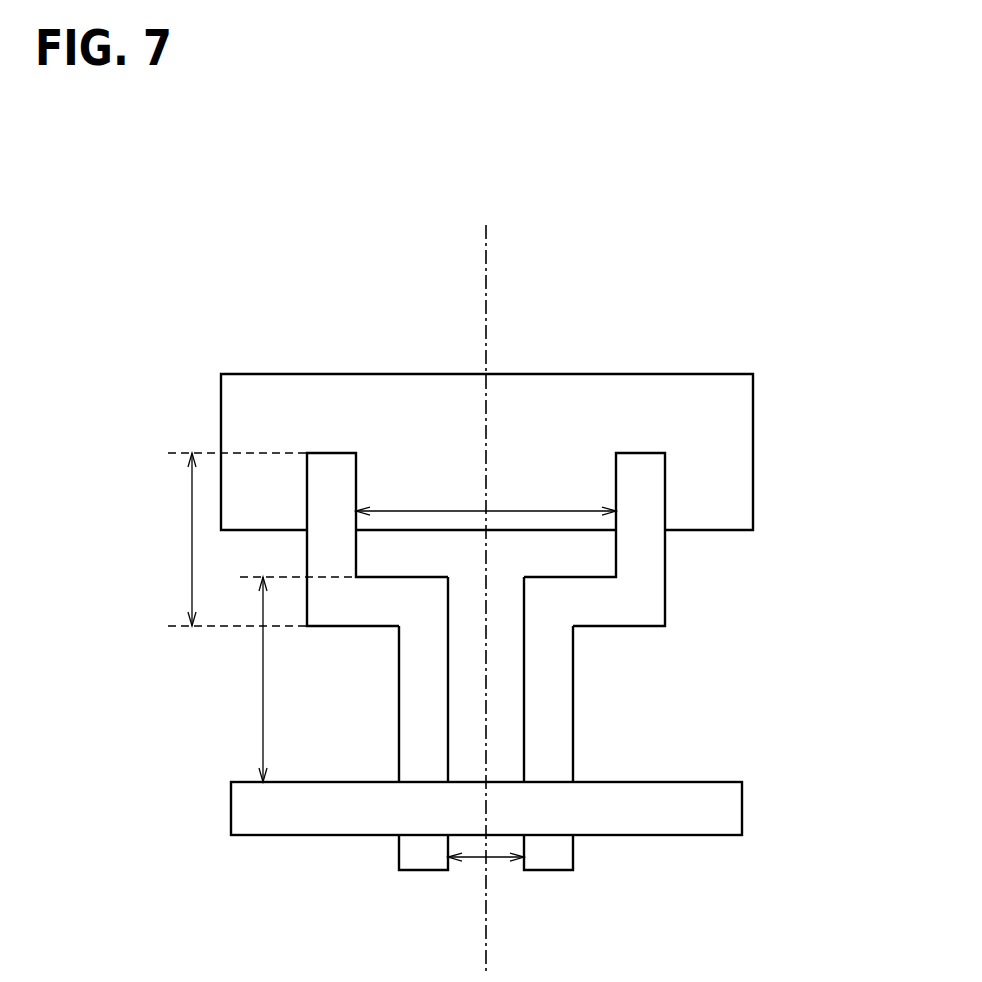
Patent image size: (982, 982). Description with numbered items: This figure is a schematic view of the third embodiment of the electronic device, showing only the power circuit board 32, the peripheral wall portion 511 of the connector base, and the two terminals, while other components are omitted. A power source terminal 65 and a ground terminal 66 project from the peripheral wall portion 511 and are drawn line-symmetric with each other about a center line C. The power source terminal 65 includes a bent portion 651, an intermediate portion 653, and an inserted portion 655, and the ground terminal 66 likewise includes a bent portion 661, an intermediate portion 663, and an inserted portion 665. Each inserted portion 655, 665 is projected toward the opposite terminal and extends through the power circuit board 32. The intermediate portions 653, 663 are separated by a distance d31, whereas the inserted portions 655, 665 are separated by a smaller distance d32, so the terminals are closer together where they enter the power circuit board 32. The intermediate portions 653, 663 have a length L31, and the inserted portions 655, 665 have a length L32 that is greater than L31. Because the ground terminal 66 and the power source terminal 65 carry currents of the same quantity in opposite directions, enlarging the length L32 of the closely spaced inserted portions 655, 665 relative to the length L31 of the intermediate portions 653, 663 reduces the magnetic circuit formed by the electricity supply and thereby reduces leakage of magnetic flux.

The peripheral wall portion 511 is at (235, 413).
The bent portion 661 is at (335, 453).
The intermediate portion 663 is at (318, 552).
The inserted portion 665 is at (411, 719).
The ground terminal 66 is at (332, 632).
The bent portion 651 is at (641, 453).
The intermediate portion 653 is at (648, 557).
The inserted portion 655 is at (555, 728).
The power source terminal 65 is at (644, 630).
The power circuit board 32 is at (730, 804).
The center line C is at (486, 273).
The length of intermediate portions L31 is at (190, 553).
The length of inserted portions L32 is at (261, 698).
The distance between intermediate portions d31 is at (539, 508).
The distance between inserted portions d32 is at (473, 858).